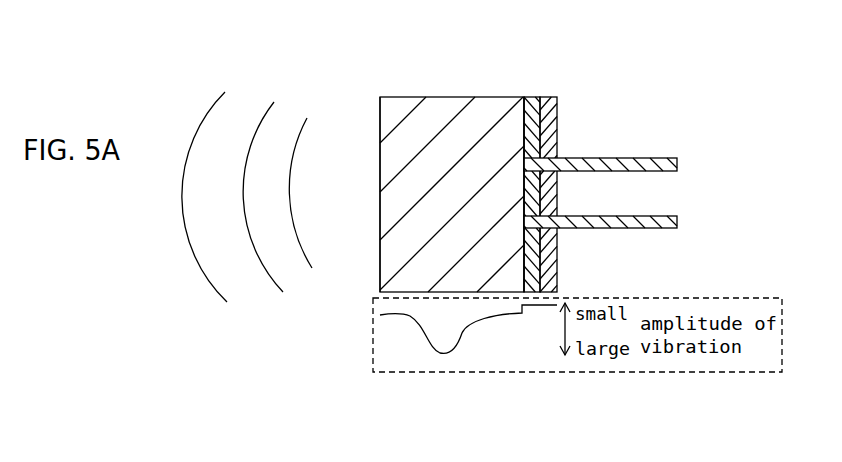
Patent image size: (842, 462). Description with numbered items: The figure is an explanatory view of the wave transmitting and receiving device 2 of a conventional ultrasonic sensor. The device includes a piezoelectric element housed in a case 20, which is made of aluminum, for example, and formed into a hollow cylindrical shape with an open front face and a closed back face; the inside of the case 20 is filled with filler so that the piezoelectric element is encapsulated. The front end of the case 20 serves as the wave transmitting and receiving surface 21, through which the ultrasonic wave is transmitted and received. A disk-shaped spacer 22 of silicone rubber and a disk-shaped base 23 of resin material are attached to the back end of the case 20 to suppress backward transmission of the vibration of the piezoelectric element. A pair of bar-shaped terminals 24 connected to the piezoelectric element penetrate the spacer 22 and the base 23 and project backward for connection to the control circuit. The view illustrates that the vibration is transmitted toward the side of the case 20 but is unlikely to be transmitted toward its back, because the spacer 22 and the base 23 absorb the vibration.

The wave transmitting and receiving device 2 is at (536, 146).
The case 20 is at (430, 118).
The wave transmitting and receiving surface 21 is at (380, 177).
The spacer 22 is at (532, 105).
The base 23 is at (548, 125).
The terminals 24 is at (637, 193).